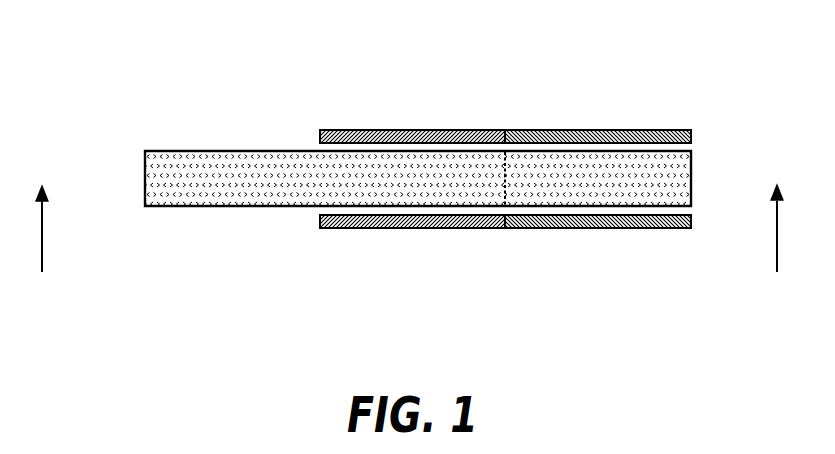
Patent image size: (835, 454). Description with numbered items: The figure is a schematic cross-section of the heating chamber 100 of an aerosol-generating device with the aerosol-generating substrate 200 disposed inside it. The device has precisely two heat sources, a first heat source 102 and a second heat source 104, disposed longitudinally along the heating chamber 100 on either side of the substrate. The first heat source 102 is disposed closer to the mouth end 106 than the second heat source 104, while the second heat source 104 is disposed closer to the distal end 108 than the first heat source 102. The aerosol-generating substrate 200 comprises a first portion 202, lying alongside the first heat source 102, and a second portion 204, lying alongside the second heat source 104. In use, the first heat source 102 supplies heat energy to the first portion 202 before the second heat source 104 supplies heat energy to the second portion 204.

The heating chamber 100 is at (510, 167).
The first heat source 102 is at (385, 130).
The second heat source 104 is at (637, 130).
The mouth end 106 is at (46, 248).
The distal end 108 is at (781, 246).
The aerosol-generating substrate 200 is at (418, 174).
The first portion 202 is at (268, 187).
The second portion 204 is at (563, 187).